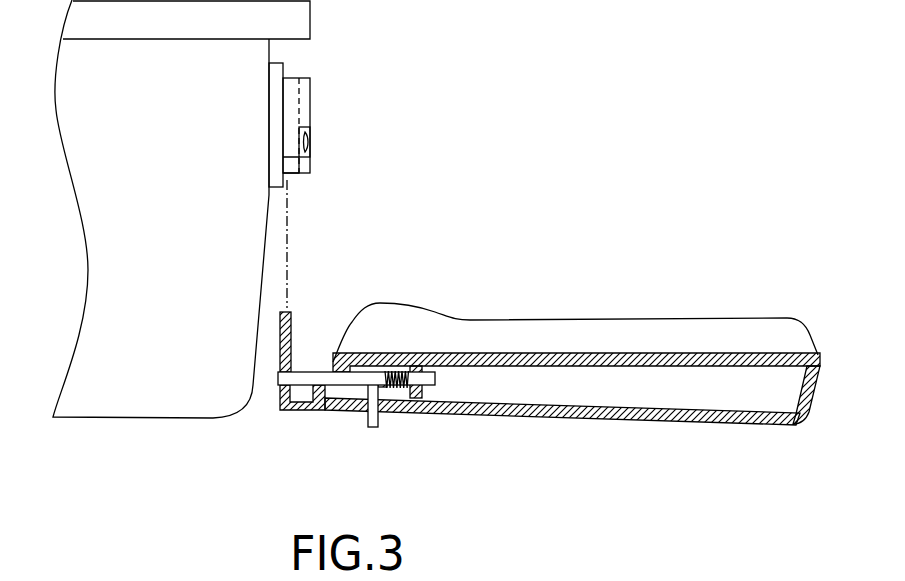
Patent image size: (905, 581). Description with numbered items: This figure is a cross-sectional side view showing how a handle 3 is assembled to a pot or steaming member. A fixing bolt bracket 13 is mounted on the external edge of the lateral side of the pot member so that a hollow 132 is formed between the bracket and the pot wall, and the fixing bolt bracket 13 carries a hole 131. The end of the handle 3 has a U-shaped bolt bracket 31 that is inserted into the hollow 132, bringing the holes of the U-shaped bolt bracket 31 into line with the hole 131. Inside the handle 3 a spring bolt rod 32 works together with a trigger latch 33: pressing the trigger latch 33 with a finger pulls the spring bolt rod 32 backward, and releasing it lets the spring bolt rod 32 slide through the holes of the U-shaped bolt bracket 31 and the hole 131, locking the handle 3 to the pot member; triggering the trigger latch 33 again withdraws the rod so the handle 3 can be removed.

The handle 3 is at (585, 340).
The fixing bolt bracket 13 is at (308, 88).
The hole 131 is at (307, 137).
The hollow 132 is at (290, 160).
The U-shaped bolt bracket 31 is at (279, 388).
The spring bolt rod 32 is at (308, 375).
The trigger latch 33 is at (377, 423).